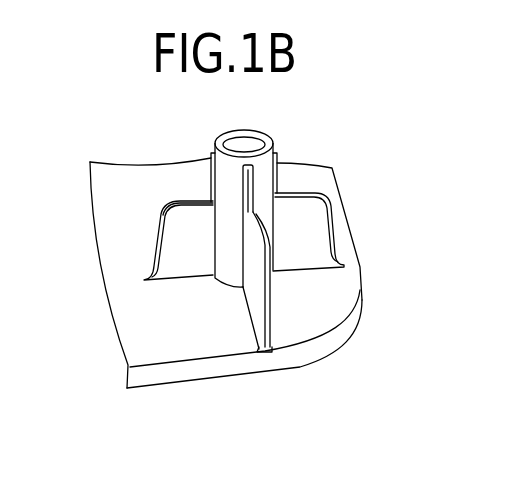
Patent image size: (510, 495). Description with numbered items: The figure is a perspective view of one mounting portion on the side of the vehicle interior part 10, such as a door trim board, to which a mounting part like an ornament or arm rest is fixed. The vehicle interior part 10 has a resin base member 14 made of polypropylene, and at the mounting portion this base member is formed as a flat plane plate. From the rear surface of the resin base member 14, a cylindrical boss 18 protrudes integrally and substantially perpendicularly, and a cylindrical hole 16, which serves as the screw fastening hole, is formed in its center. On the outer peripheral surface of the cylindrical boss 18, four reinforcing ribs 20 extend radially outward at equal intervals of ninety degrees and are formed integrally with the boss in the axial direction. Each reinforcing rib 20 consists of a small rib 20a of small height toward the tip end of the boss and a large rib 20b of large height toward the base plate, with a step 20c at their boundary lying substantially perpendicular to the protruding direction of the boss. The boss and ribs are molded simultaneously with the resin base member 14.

The vehicle interior part 10 is at (87, 380).
The resin base member 14 is at (182, 340).
The cylindrical hole 16 is at (242, 146).
The cylindrical boss 18 is at (265, 185).
The reinforcing ribs 20 is at (225, 277).
The small rib 20a is at (212, 177).
The large rib 20b is at (187, 237).
The step 20c is at (188, 201).